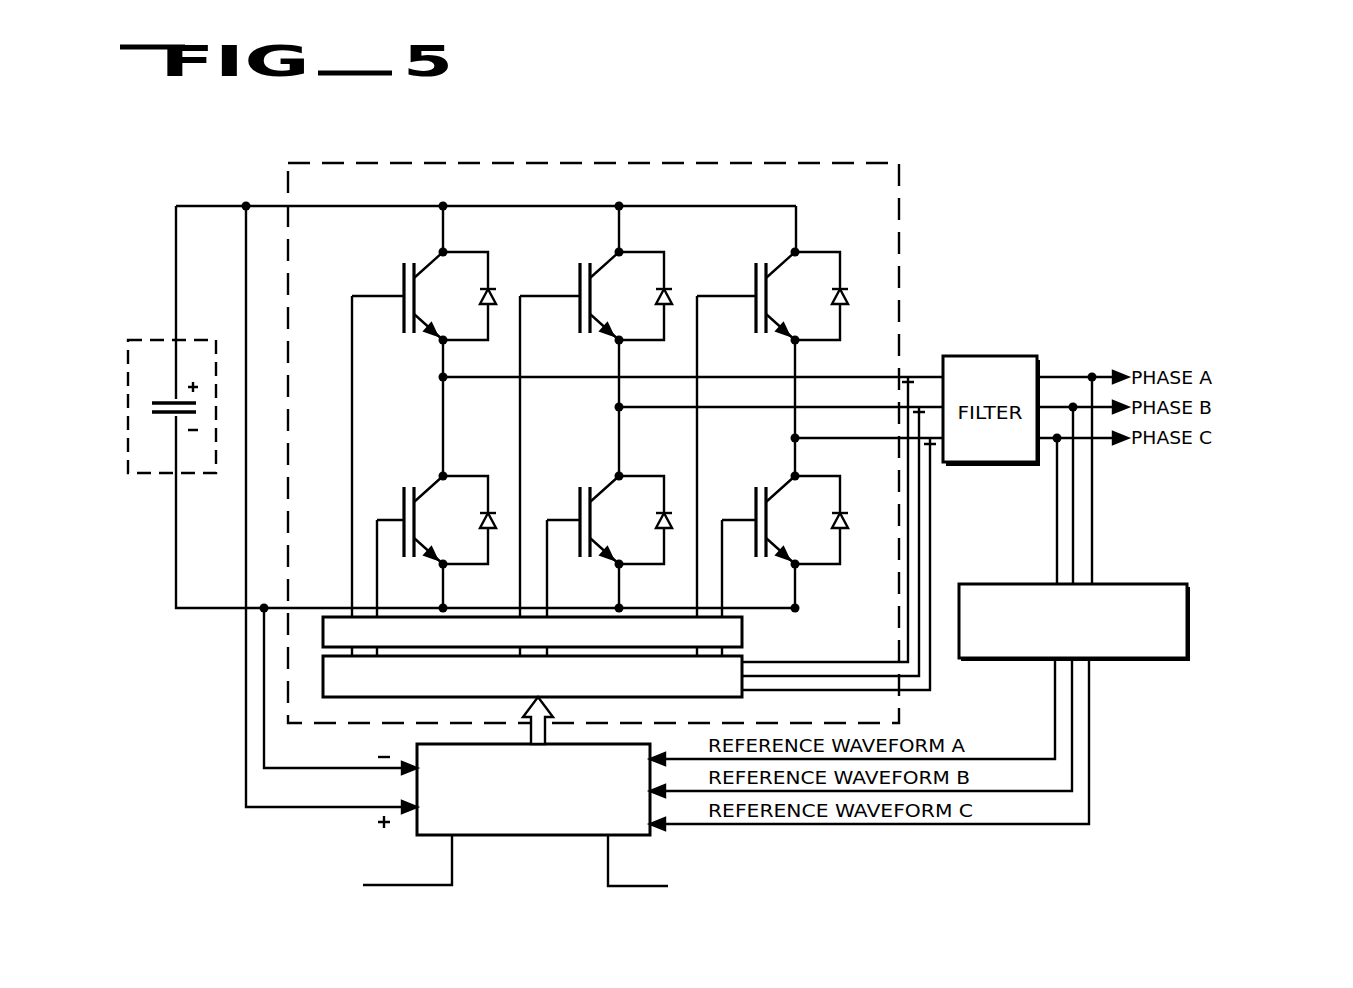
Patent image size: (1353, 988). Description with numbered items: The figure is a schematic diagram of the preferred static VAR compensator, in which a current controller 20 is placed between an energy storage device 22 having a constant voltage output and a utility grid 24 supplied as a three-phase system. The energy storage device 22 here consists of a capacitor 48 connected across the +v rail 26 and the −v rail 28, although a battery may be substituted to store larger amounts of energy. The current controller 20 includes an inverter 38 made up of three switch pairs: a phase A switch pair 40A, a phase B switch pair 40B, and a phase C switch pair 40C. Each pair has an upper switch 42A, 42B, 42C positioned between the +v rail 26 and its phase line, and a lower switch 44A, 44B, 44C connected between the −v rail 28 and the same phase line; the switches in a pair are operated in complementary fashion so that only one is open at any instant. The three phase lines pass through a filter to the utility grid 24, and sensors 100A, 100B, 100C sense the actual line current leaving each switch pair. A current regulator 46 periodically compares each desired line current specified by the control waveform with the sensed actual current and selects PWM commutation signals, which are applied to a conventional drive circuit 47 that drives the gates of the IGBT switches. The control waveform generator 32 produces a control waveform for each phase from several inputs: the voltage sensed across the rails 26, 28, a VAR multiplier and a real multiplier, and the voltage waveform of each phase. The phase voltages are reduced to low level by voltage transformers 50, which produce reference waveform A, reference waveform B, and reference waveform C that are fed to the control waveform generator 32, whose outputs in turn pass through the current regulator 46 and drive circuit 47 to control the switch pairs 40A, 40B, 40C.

The current controller 20 is at (777, 162).
The energy storage device 22 is at (141, 339).
The utility grid 24 is at (1330, 464).
The +v rail 26 is at (201, 205).
The −v rail 28 is at (176, 590).
The control waveform generator 32 is at (540, 838).
The inverter 38 is at (582, 204).
The phase A switch pair 40A is at (426, 466).
The phase B switch pair 40B is at (604, 466).
The phase C switch pair 40C is at (778, 474).
The upper switch 42A is at (396, 277).
The upper switch 42B is at (578, 277).
The upper switch 42C is at (752, 277).
The lower switch 44A is at (498, 505).
The lower switch 44B is at (672, 505).
The lower switch 44C is at (862, 508).
The current regulator 46 is at (722, 698).
The drive circuit 47 is at (744, 641).
The capacitor 48 is at (166, 400).
The voltage transformers 50 is at (1192, 604).
The sensor 100A is at (909, 375).
The sensor 100B is at (920, 405).
The sensor 100C is at (931, 436).